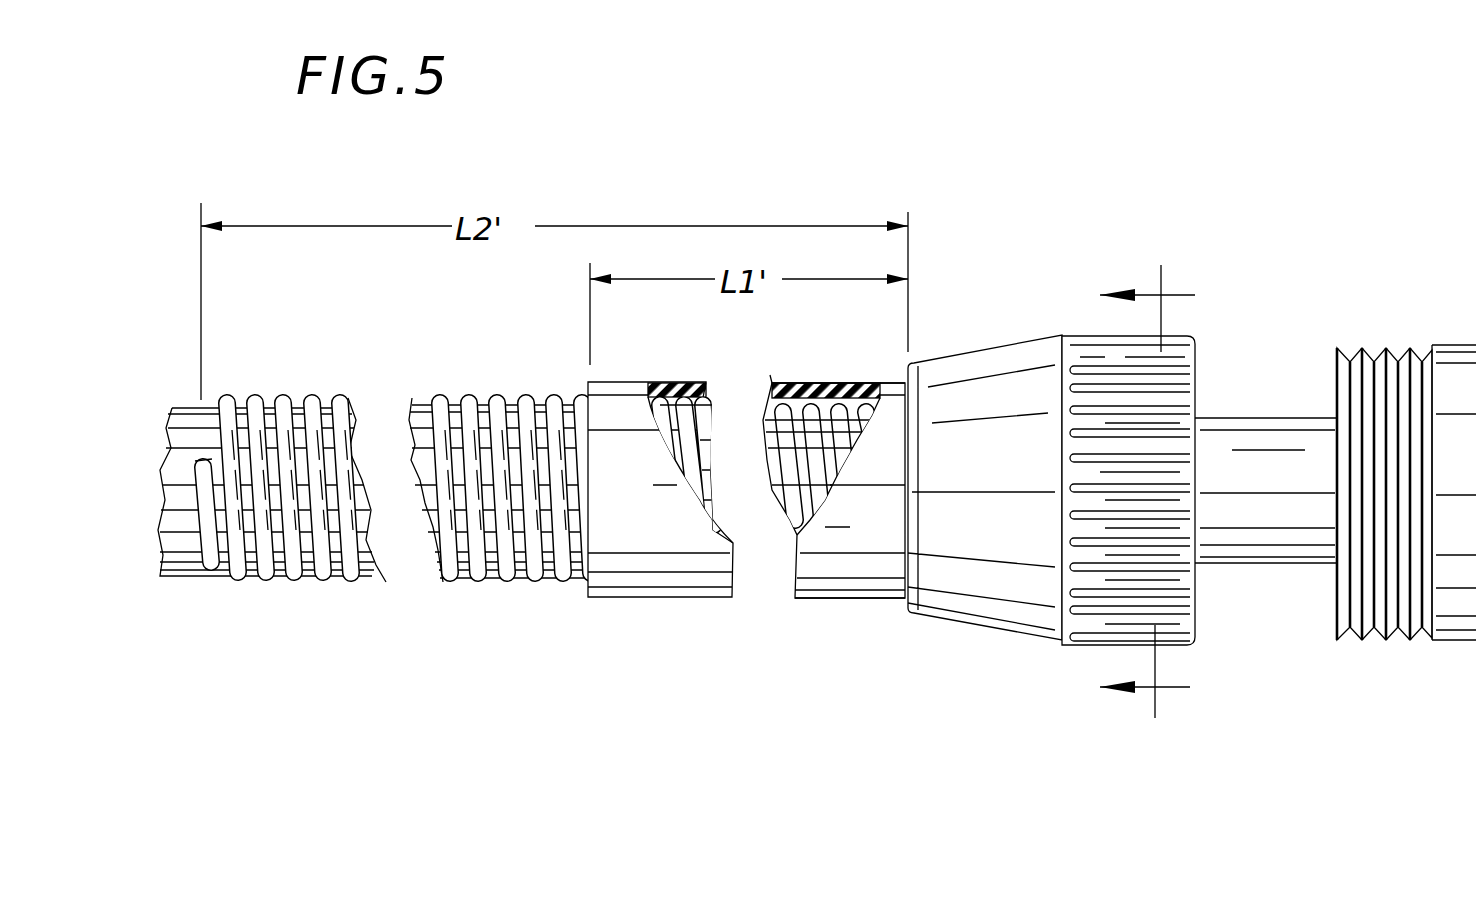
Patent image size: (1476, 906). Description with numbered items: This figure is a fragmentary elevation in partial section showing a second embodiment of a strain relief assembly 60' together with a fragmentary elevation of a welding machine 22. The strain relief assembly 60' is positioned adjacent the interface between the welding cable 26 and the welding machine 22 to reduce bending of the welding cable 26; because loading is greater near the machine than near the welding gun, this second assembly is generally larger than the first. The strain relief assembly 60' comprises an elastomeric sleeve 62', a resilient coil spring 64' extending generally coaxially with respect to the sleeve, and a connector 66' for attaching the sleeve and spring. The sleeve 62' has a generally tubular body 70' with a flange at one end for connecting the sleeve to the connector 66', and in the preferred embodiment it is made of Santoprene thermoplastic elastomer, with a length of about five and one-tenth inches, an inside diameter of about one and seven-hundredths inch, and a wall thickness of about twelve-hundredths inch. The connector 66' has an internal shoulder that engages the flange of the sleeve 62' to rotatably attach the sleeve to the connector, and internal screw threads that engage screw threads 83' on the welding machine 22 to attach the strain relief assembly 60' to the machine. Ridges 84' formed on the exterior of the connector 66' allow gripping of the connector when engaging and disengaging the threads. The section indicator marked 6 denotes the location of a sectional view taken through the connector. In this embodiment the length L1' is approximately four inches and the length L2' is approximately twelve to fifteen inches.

The welding cable 26 is at (177, 566).
The resilient coil spring 64' is at (393, 543).
The tubular body 70' is at (658, 542).
The elastomeric sleeve 62' is at (834, 545).
The strain relief assembly 60' is at (979, 596).
The connector 66' is at (985, 536).
The ridges 84' is at (1110, 552).
The screw threads 83' is at (1384, 436).
The welding machine 22 is at (1447, 645).
The section line 6 is at (1147, 495).